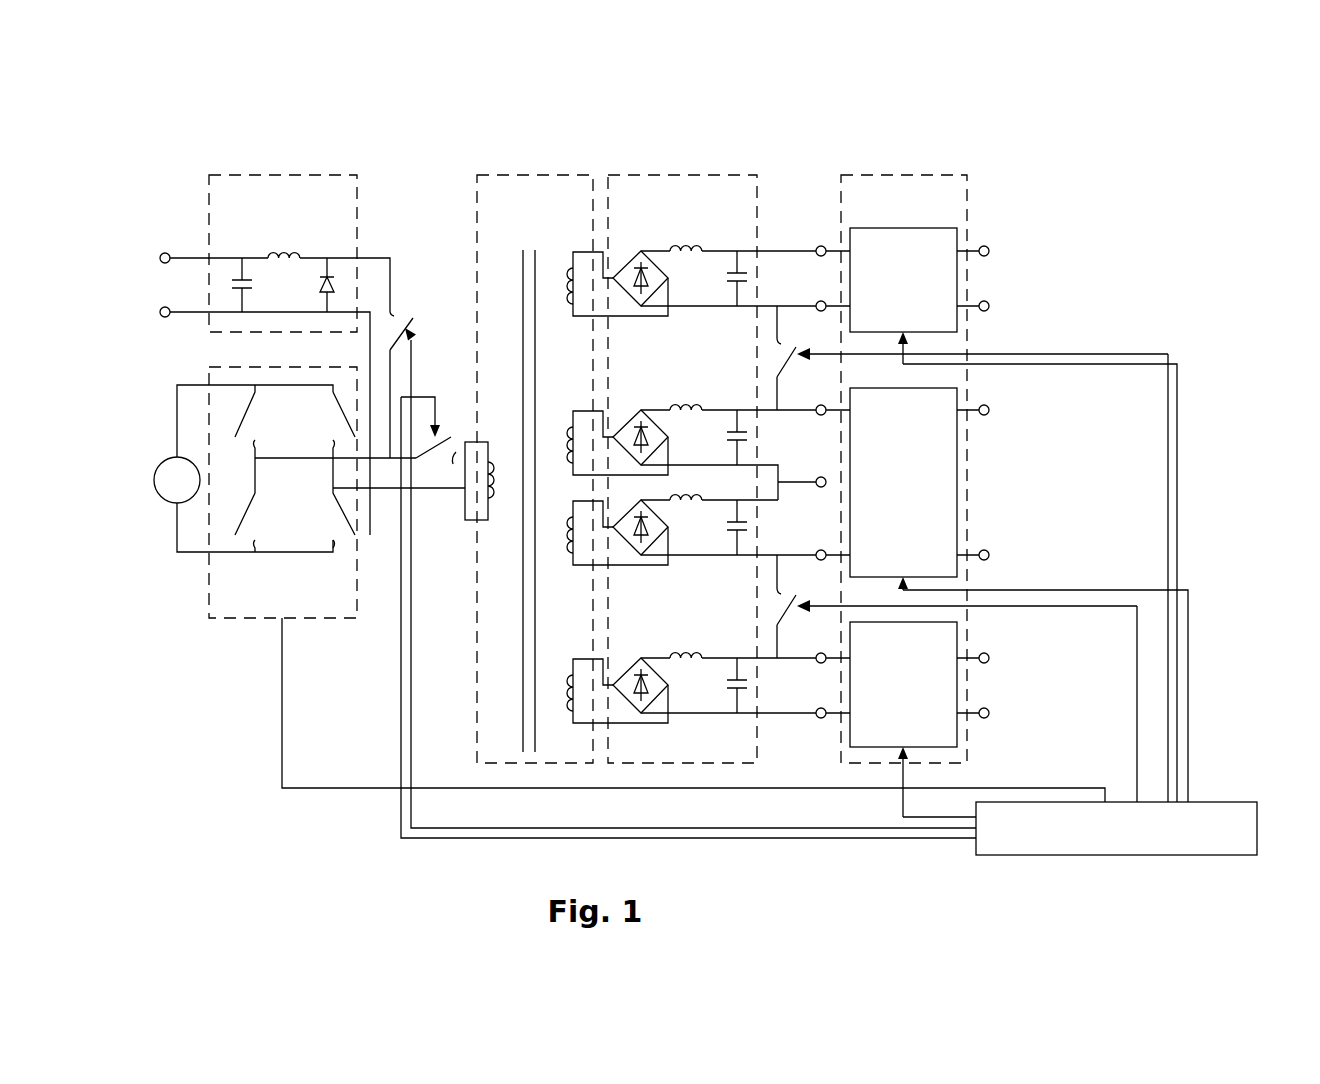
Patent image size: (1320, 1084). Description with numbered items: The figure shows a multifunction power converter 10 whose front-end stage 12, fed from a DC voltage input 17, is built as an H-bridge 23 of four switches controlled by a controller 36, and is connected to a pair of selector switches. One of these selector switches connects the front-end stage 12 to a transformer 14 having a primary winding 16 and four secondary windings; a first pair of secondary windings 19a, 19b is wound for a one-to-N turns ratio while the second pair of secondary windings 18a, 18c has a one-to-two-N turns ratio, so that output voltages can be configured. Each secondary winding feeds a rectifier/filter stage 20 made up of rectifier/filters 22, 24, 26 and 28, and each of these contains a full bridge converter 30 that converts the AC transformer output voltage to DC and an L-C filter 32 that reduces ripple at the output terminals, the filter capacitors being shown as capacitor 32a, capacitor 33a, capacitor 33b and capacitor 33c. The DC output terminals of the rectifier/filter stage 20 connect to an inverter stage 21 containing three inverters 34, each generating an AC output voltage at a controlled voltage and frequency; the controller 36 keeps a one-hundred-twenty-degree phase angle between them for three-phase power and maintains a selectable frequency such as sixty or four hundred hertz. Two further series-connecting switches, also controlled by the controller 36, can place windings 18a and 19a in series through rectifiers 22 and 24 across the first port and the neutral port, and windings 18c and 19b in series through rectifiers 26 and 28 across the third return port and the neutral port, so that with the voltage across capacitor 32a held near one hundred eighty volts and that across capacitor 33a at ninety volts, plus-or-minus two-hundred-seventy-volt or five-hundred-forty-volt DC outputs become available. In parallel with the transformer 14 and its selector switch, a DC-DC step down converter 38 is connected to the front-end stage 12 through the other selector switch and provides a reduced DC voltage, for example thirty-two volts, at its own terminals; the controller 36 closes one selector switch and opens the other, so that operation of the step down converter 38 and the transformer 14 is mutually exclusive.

The multifunction power converter 10 is at (1042, 224).
The front-end stage 12 is at (185, 552).
The transformer 14 is at (532, 175).
The primary winding 16 is at (477, 521).
The voltage input 17 is at (156, 468).
The secondary winding 18a is at (590, 251).
The secondary winding 18c is at (580, 658).
The secondary winding 19a is at (590, 410).
The secondary winding 19b is at (580, 560).
The rectifier/filter stage 20 is at (692, 175).
The inverter stage 21 is at (915, 175).
The rectifier/filter 22 is at (677, 324).
The H-bridge 23 is at (214, 406).
The rectifier/filter 24 is at (678, 441).
The rectifier/filter 26 is at (678, 531).
The rectifier/filter 28 is at (678, 691).
The full bridge converter 30 is at (630, 702).
The L-C filter 32 is at (736, 240).
The capacitor 32a is at (748, 272).
The capacitor 33a is at (750, 431).
The capacitor 33b is at (750, 521).
The capacitor 33c is at (750, 681).
The inverter 34 is at (950, 465).
The controller 36 is at (1212, 802).
The DC-DC step down converter 38 is at (287, 175).